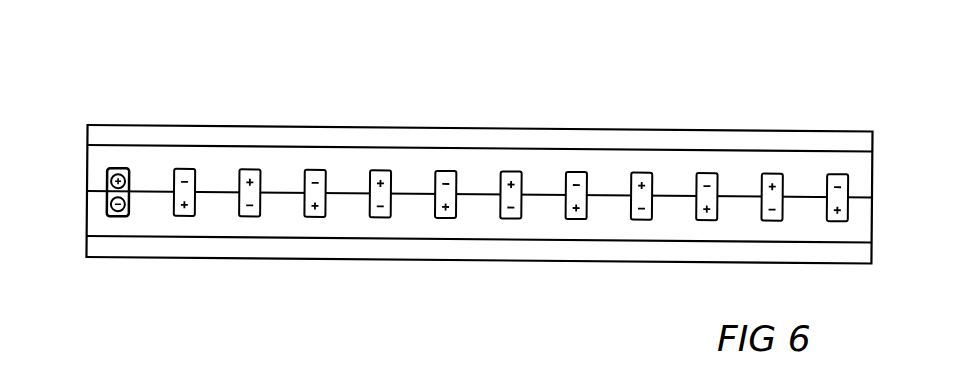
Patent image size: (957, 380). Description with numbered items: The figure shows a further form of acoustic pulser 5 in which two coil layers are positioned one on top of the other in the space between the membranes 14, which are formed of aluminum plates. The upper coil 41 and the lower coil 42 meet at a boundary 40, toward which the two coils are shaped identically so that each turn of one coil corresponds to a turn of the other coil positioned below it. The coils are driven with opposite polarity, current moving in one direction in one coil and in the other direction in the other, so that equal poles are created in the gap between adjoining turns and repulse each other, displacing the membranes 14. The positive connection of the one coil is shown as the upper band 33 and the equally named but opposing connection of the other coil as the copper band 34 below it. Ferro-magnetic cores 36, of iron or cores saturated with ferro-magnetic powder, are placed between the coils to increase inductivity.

The linear motor assembly 5 is at (454, 109).
The membranes 14 is at (204, 137).
The upper band 33 is at (120, 168).
The copper band 34 is at (117, 218).
The ferro-magnetic cores 36 is at (272, 157).
The boundary 40 is at (857, 195).
The upper coil 41 is at (842, 172).
The lower coil 42 is at (848, 215).